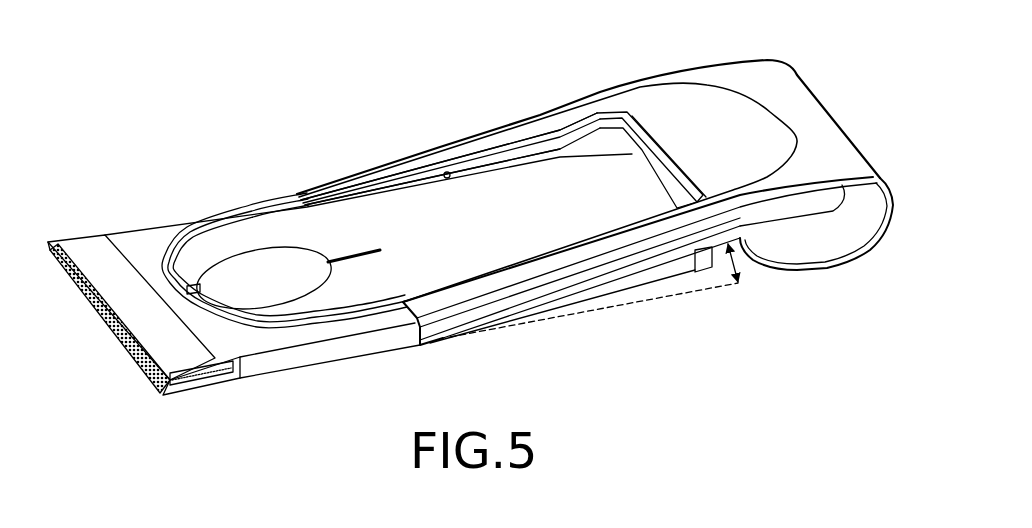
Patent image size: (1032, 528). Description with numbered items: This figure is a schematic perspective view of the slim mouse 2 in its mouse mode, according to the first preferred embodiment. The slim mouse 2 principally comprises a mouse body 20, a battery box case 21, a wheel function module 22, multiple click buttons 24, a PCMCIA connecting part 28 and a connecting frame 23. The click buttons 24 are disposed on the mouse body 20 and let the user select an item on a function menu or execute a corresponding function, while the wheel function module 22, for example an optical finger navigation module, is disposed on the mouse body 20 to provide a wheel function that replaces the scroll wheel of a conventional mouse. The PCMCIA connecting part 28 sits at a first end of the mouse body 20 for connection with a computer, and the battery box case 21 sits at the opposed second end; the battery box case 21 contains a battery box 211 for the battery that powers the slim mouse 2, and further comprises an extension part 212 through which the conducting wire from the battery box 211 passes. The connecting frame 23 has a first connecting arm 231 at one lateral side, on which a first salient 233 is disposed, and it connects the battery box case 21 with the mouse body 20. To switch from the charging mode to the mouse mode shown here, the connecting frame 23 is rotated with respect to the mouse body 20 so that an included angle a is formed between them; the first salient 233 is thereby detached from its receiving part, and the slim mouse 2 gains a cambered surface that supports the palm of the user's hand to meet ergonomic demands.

The slim mouse 2 is at (292, 61).
The mouse body 20 is at (143, 246).
The battery box case 21 is at (768, 88).
The wheel function module 22 is at (158, 352).
The connecting frame 23 is at (560, 128).
The click buttons 24 is at (262, 227).
The PCMCIA connecting part 28 is at (133, 303).
The battery box 211 is at (827, 240).
The extension part 212 is at (533, 114).
The first connecting arm 231 is at (505, 157).
The first salient 233 is at (443, 172).
The included angle a is at (735, 247).